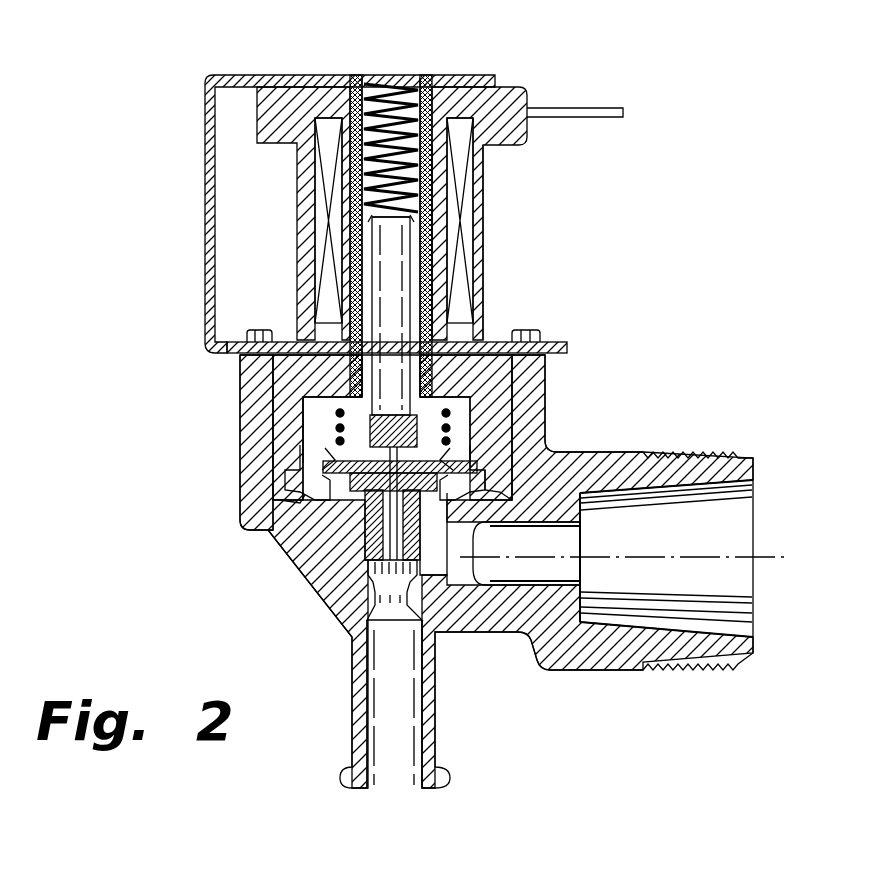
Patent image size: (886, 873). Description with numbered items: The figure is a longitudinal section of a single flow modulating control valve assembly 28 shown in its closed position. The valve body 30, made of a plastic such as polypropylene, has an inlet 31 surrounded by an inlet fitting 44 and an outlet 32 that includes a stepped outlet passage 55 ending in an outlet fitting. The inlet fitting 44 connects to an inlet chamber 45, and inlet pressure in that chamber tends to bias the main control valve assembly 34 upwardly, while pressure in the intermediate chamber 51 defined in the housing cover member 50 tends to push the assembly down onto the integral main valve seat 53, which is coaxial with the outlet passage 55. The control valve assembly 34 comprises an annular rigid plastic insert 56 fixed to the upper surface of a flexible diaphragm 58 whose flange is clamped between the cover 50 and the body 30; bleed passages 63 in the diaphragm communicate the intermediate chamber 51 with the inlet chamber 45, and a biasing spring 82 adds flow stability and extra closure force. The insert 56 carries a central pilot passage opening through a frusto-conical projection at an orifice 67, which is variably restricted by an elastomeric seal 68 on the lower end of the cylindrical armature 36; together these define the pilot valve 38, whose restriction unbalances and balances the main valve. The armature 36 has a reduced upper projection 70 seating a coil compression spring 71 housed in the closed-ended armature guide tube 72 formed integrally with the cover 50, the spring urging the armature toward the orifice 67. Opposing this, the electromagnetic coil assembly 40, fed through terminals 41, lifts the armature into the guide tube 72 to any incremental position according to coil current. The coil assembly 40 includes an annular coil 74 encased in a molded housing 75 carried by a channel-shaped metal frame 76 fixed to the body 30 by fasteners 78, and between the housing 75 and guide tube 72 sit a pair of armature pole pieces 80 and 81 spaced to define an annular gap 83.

The flow modulating control valve assembly 28 is at (592, 291).
The valve body 30 is at (320, 600).
The inlet 31 is at (720, 536).
The outlet 32 is at (395, 775).
The main control valve assembly 34 is at (300, 503).
The armature 36 is at (485, 330).
The pilot valve 38 is at (346, 438).
The electromagnetic coil assembly 40 is at (497, 185).
The terminals 41 is at (605, 108).
The inlet fitting 44 is at (713, 452).
The inlet chamber 45 is at (525, 452).
The housing cover member 50 is at (525, 365).
The intermediate chamber 51 is at (300, 405).
The main valve seat 53 is at (317, 583).
The stepped outlet passage 55 is at (345, 637).
The annular rigid plastic insert 56 is at (313, 491).
The flexible diaphragm 58 is at (478, 421).
The bleed passages 63 is at (440, 530).
The orifice 67 is at (478, 554).
The elastomeric seal 68 is at (407, 352).
The reduced upper projection 70 is at (372, 216).
The coil compression spring 71 is at (400, 78).
The armature guide tube 72 is at (427, 78).
The annular coil 74 is at (300, 80).
The molded housing 75 is at (512, 88).
The channel-shaped metal frame 76 is at (205, 130).
The fasteners 78 is at (240, 330).
The armature pole piece 80 is at (330, 100).
The armature pole piece 81 is at (478, 278).
The biasing spring 82 is at (520, 393).
The annular gap 83 is at (432, 226).